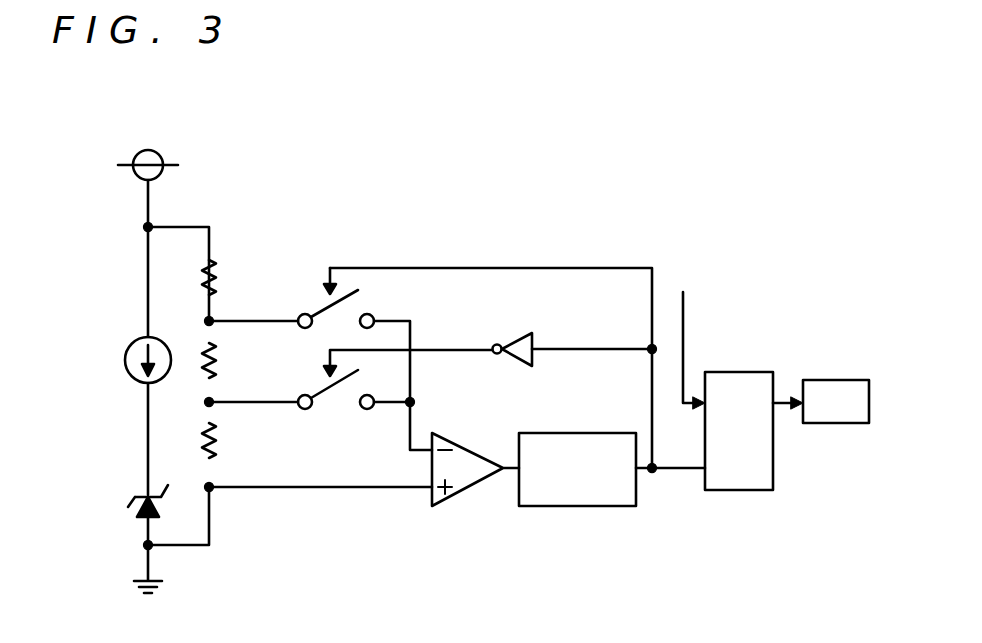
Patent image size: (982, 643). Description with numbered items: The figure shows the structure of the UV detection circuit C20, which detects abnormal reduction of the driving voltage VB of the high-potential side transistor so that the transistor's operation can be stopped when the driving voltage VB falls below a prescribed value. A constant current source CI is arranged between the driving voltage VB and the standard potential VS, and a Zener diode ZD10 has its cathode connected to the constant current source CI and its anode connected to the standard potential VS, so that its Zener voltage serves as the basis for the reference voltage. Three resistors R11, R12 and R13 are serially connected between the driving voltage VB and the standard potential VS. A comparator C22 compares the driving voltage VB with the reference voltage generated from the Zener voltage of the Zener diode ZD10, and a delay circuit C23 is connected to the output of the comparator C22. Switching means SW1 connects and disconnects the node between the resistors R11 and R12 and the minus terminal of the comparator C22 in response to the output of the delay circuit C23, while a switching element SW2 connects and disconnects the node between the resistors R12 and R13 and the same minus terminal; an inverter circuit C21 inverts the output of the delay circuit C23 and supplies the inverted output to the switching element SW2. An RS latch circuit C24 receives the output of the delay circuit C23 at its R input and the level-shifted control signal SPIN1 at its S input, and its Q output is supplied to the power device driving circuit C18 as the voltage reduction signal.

The UV detection circuit C20 is at (675, 193).
The driving voltage VB is at (168, 188).
The constant current source CI is at (125, 360).
The Zener diode ZD10 is at (135, 511).
The standard potential VS is at (163, 590).
The resistor R11 is at (218, 281).
The resistor R12 is at (218, 361).
The resistor R13 is at (218, 441).
The switching means SW1 is at (345, 312).
The switching element SW2 is at (343, 397).
The inverter circuit C21 is at (514, 332).
The comparator C22 is at (475, 444).
The delay circuit C23 is at (579, 432).
The RS latch circuit C24 is at (742, 372).
The power device driving circuit C18 is at (840, 380).
The level-shifted control signal SPIN1 is at (703, 338).